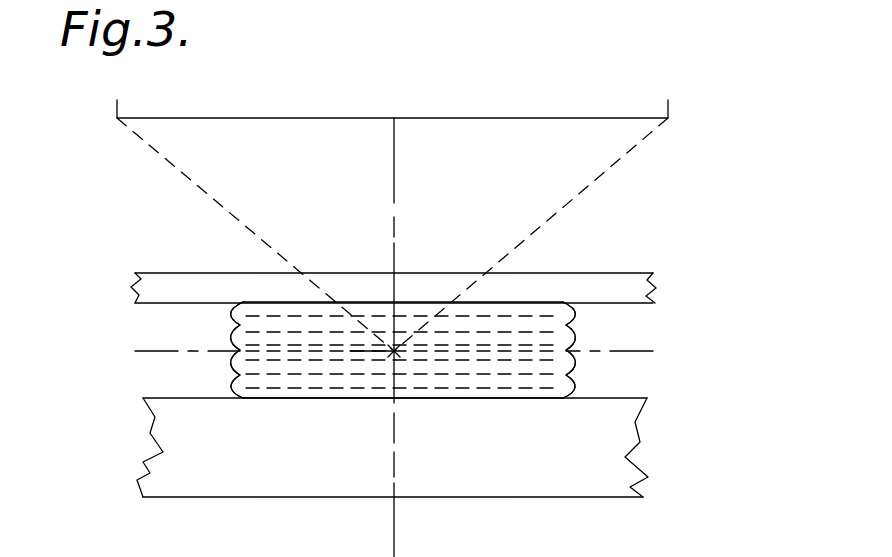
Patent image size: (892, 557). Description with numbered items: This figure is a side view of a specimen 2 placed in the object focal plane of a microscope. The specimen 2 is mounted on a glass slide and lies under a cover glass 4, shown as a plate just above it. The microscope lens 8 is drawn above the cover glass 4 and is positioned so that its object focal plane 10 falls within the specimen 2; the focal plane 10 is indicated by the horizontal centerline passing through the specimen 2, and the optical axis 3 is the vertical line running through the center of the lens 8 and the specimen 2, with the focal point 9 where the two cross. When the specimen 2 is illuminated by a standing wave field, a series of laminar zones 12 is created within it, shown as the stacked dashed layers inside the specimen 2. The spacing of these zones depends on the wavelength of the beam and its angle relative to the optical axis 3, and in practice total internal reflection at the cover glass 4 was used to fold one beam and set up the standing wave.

The microscope lens 8 is at (423, 118).
The cover glass 4 is at (218, 283).
The specimen 2 is at (235, 372).
The laminar zones 12 is at (243, 321).
The object focal plane 10 is at (635, 351).
The focal point 9 is at (394, 351).
The optical axis 3 is at (394, 532).